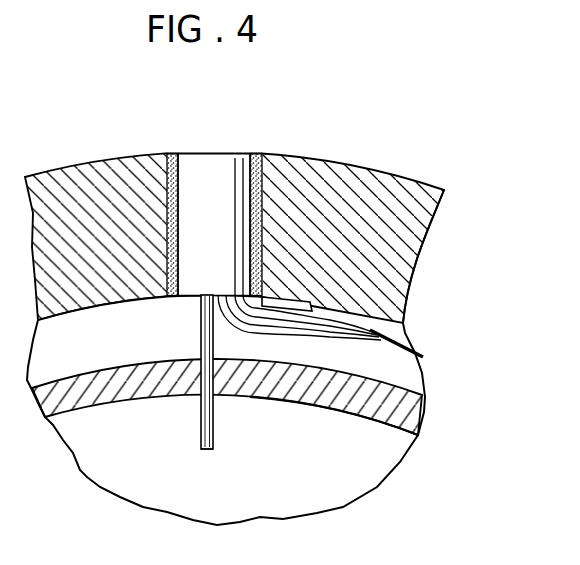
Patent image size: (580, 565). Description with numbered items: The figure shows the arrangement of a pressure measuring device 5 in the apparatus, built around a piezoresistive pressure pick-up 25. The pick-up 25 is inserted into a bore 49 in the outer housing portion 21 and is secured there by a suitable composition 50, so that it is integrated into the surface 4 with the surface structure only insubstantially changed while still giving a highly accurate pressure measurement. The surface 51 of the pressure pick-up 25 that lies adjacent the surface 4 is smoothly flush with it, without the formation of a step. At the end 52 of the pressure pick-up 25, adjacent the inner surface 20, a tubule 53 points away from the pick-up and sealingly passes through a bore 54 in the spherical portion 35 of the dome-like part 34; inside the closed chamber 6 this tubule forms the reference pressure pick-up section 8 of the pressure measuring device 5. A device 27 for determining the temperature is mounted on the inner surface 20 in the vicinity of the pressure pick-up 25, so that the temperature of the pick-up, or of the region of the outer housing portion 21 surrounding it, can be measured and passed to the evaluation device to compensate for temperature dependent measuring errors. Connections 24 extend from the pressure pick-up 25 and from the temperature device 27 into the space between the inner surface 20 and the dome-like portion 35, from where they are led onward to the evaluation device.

The surface 4 is at (378, 171).
The pressure measuring device 5 is at (191, 139).
The closed chamber 6 is at (323, 490).
The reference pressure pick-up section 8 is at (205, 452).
The inner surface 20 is at (100, 309).
The outer housing portion 21 is at (424, 174).
The connections 24 is at (408, 345).
The piezoresistive pressure pick-up 25 is at (212, 158).
The device for determining the temperature 27 is at (305, 309).
The dome-like part 34 is at (76, 420).
The spherical portion 35 is at (291, 406).
The bore 49 is at (165, 180).
The composition 50 is at (172, 297).
The surface of the pressure pick-up 51 is at (227, 154).
The end of the pressure pick-up 52 is at (192, 298).
The tubule 53 is at (213, 341).
The bore 54 is at (208, 382).